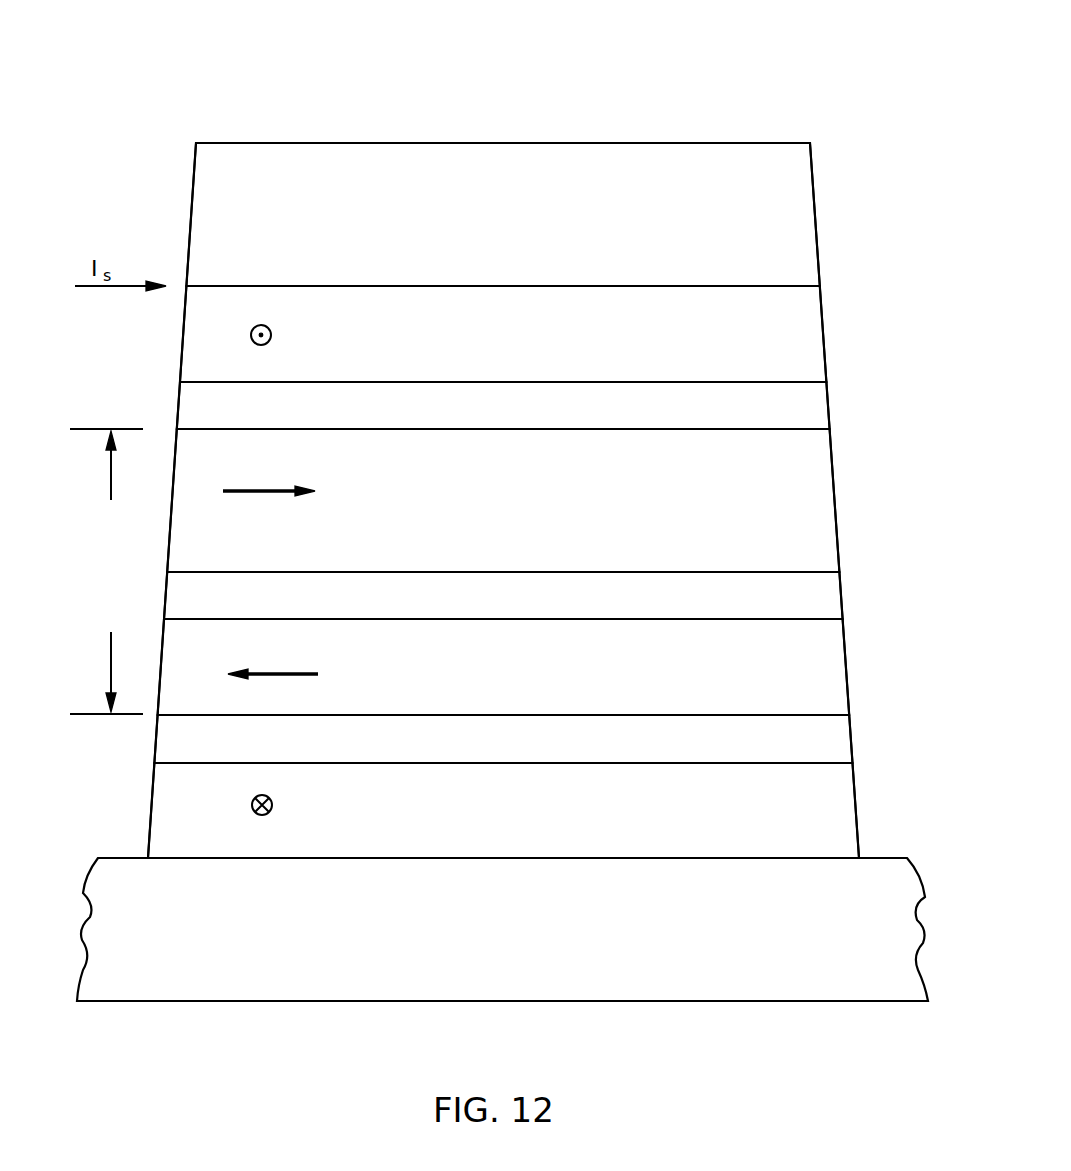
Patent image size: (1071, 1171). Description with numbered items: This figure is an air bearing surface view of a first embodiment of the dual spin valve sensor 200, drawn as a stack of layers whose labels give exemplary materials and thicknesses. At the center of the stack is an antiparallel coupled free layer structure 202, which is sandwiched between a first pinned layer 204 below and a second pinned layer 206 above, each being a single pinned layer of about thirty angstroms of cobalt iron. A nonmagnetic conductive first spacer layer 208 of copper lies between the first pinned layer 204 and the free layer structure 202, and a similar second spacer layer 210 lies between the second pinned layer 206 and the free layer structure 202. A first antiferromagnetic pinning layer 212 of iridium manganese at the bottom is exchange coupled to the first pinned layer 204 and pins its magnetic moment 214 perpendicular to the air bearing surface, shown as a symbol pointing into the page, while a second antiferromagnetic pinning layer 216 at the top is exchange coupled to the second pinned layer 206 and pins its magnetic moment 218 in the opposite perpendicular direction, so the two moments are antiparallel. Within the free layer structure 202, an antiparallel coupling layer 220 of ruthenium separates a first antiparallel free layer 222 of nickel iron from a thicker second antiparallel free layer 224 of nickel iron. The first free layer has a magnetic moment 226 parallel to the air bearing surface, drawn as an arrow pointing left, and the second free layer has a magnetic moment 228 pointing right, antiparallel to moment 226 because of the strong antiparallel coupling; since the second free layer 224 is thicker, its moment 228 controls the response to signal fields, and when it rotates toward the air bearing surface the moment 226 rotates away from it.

The dual spin valve sensor 200 is at (724, 127).
The antiparallel coupled free layer structure 202 is at (106, 571).
The first pinned layer 204 is at (832, 801).
The second pinned layer 206 is at (810, 334).
The first spacer layer 208 is at (823, 744).
The second spacer layer 210 is at (810, 404).
The first antiferromagnetic pinning layer 212 is at (790, 933).
The magnetic moment of the first pinned layer 214 is at (270, 798).
The second antiferromagnetic pinning layer 216 is at (788, 199).
The magnetic moment of the second pinned layer 218 is at (269, 328).
The antiparallel coupling layer 220 is at (810, 597).
The first antiparallel free layer 222 is at (822, 664).
The second antiparallel free layer 224 is at (811, 488).
The magnetic moment of the first AP free layer 226 is at (268, 672).
The magnetic moment of the second AP free layer 228 is at (268, 488).